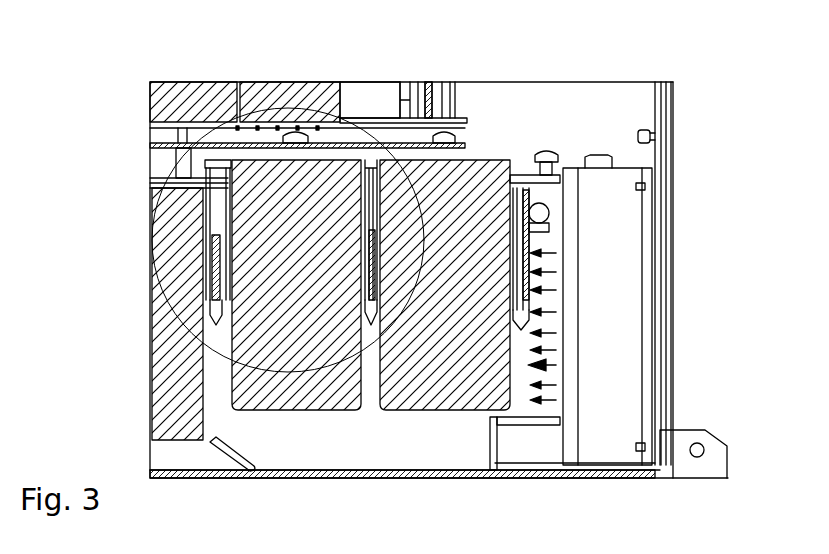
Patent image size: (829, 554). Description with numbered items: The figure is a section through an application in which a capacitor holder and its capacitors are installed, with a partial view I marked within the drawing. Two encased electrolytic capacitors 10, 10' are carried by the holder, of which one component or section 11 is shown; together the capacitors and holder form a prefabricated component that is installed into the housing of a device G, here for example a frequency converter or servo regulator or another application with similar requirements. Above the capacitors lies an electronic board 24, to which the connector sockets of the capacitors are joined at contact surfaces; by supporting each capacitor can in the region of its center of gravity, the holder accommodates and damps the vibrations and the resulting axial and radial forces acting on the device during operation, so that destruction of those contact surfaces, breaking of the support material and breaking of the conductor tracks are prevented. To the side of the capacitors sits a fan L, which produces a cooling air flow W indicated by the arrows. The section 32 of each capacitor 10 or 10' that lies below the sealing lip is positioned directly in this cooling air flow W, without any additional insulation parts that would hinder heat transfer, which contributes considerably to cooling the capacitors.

The electronic board 24 is at (381, 122).
The section of the capacitor 32 is at (512, 370).
The electrolytic capacitor 10 is at (449, 354).
The electrolytic capacitor 10' is at (265, 357).
The holder component 11 is at (438, 485).
The partial view I is at (166, 279).
The fan L is at (628, 241).
The cooling air flow W is at (548, 298).
The device G is at (748, 103).